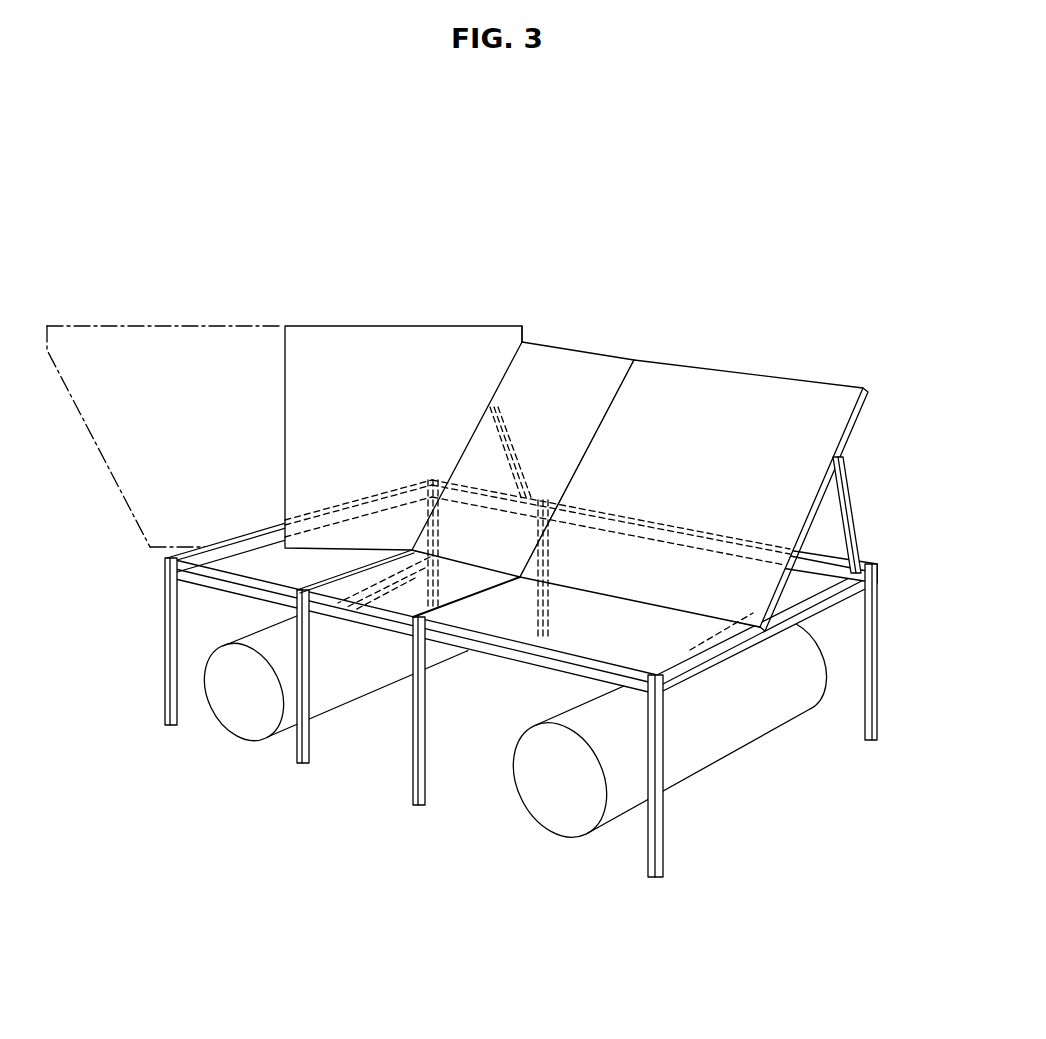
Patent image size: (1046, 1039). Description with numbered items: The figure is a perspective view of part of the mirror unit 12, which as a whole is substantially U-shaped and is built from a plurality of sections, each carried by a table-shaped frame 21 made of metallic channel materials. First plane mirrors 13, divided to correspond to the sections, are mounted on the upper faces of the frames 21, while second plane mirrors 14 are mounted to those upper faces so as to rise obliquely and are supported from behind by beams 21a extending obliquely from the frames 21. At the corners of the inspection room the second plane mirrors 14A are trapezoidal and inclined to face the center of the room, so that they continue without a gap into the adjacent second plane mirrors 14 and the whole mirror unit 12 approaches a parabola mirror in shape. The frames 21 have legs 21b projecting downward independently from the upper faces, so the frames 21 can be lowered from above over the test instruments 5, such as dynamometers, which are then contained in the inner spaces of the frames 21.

The test instrument 5 is at (243, 697).
The mirror unit 12 is at (576, 412).
The first plane mirror 13 is at (262, 563).
The second plane mirror 14 is at (572, 365).
The second plane mirror at corner 14A is at (398, 348).
The frame 21 is at (494, 684).
The beam 21a is at (848, 503).
The leg 21b is at (863, 723).